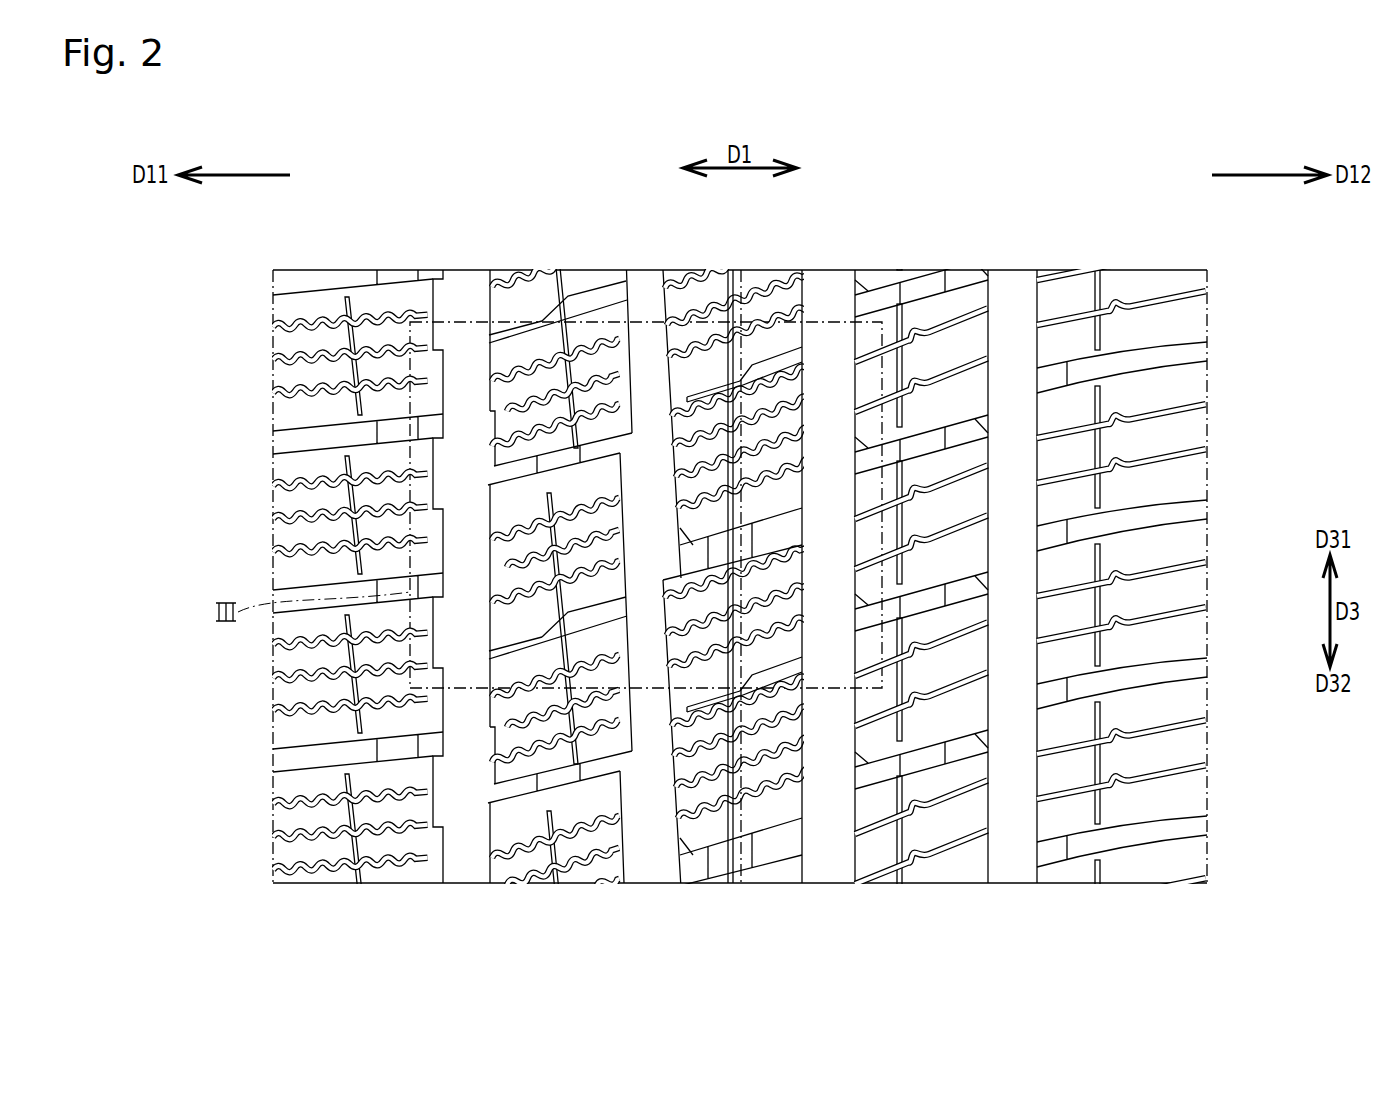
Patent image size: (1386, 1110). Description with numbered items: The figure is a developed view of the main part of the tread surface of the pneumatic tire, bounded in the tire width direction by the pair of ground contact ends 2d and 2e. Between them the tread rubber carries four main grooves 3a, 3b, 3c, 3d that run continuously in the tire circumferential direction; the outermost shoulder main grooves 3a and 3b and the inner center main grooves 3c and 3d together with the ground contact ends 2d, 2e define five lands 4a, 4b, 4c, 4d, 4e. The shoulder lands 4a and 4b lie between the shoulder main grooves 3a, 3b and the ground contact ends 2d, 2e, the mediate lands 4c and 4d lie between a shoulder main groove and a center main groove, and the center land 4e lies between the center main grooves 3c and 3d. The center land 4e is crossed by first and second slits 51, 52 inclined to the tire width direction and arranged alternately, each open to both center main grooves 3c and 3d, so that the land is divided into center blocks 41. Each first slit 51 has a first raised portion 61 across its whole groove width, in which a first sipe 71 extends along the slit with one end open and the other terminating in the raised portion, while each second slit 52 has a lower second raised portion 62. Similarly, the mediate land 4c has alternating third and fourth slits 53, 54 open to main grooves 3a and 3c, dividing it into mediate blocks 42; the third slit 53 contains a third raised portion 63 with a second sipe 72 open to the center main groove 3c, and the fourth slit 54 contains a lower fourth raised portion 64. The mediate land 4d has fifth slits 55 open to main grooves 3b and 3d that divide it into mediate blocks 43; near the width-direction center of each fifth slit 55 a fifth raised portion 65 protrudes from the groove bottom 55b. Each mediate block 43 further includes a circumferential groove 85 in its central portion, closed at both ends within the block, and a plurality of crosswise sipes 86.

The ground contact end 2d is at (273, 325).
The ground contact end 2e is at (1207, 330).
The shoulder main groove 3a is at (551, 533).
The shoulder main groove 3b is at (1012, 533).
The center main groove 3c is at (650, 533).
The center main groove 3d is at (742, 533).
The shoulder land 4a is at (442, 250).
The shoulder land 4b is at (1207, 250).
The mediate land 4c is at (559, 630).
The mediate land 4d is at (942, 523).
The center land 4e is at (735, 541).
The center block 41 is at (668, 468).
The mediate block 42 is at (632, 532).
The mediate block 43 is at (989, 487).
The first slit 51 is at (666, 403).
The second slit 52 is at (805, 513).
The third slit 53 is at (487, 335).
The fourth slit 54 is at (487, 493).
The fifth slit 55 is at (989, 566).
The groove bottom of the fifth slit 55b is at (973, 576).
The first raised portion 61 is at (687, 398).
The second raised portion 62 is at (748, 534).
The third raised portion 63 is at (590, 626).
The fourth raised portion 64 is at (555, 471).
The fifth raised portion 65 is at (927, 597).
The first sipe 71 is at (690, 404).
The second sipe 72 is at (600, 610).
The circumferential groove 85 is at (903, 685).
The crosswise sipe 86 is at (947, 695).